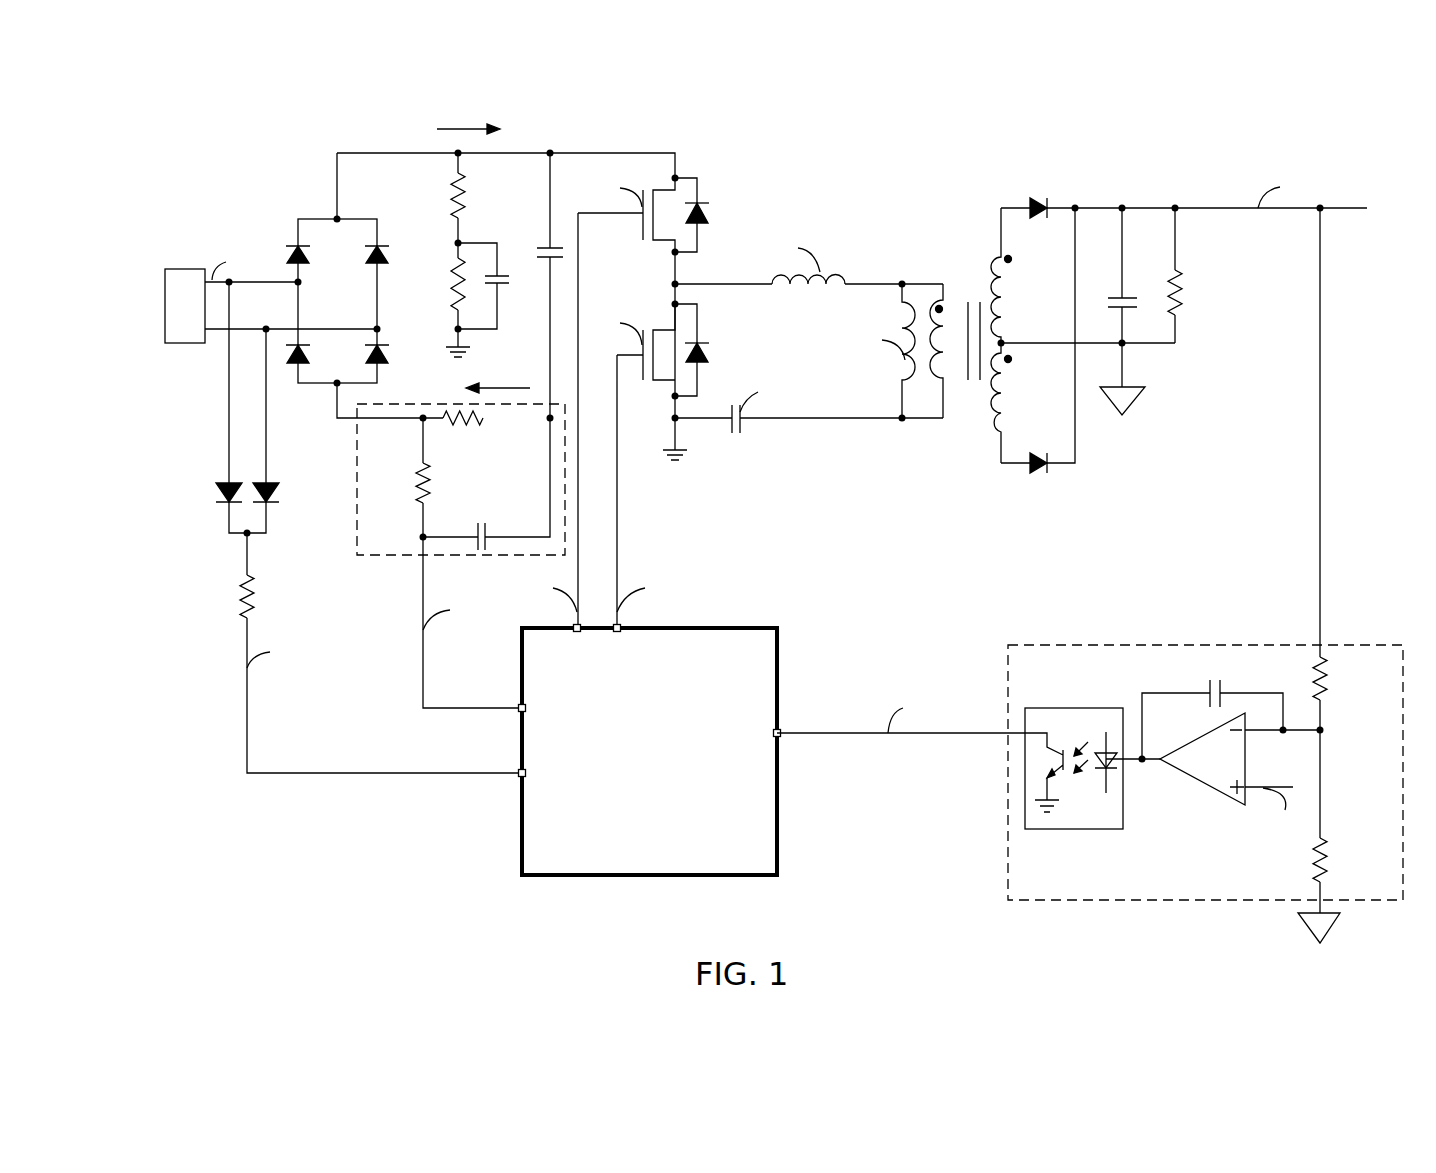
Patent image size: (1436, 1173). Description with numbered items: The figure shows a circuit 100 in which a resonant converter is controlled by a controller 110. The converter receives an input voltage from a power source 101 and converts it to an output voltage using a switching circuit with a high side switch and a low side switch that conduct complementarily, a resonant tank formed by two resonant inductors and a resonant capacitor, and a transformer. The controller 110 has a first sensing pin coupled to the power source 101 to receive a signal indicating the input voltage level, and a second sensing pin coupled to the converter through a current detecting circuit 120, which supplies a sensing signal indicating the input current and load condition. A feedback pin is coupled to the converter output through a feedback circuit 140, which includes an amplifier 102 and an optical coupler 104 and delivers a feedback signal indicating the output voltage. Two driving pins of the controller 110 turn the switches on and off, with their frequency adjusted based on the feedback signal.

The circuit 100 is at (243, 135).
The power source 101 is at (175, 268).
The amplifier 102 is at (1198, 781).
The optical coupler 104 is at (1072, 829).
The controller 110 is at (778, 830).
The current detecting circuit 120 is at (357, 462).
The feedback circuit 140 is at (1145, 645).